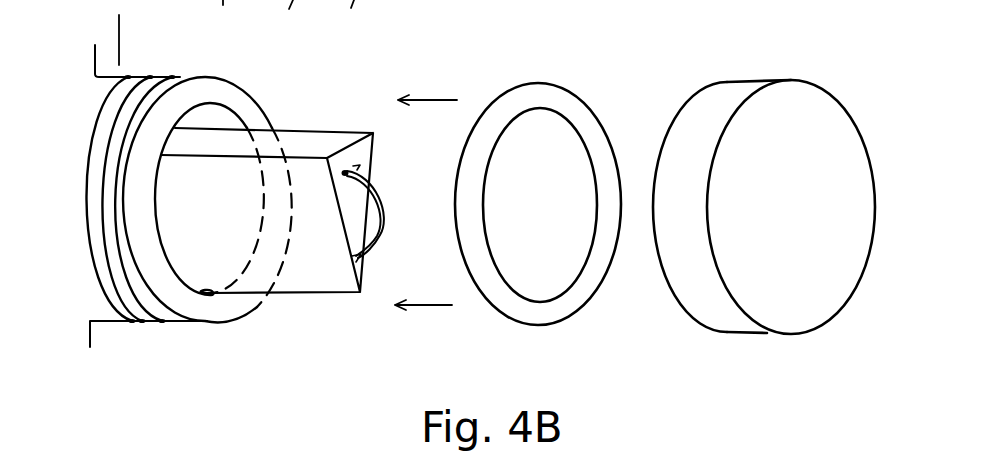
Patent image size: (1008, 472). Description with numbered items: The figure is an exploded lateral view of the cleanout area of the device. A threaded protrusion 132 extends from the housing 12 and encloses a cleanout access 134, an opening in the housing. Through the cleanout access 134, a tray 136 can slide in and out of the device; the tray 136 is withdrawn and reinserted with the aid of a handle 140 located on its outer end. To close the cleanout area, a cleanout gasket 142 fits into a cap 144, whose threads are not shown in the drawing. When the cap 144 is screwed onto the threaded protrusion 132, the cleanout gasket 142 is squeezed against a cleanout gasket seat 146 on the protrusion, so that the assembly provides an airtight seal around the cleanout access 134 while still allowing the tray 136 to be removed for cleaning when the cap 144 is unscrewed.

The housing 12 is at (115, 327).
The threaded protrusion 132 is at (182, 78).
The cleanout access 134 is at (220, 123).
The tray 136 is at (300, 130).
The handle 140 is at (375, 165).
The cleanout gasket 142 is at (543, 95).
The cap 144 is at (730, 103).
The cleanout gasket seat 146 is at (223, 93).